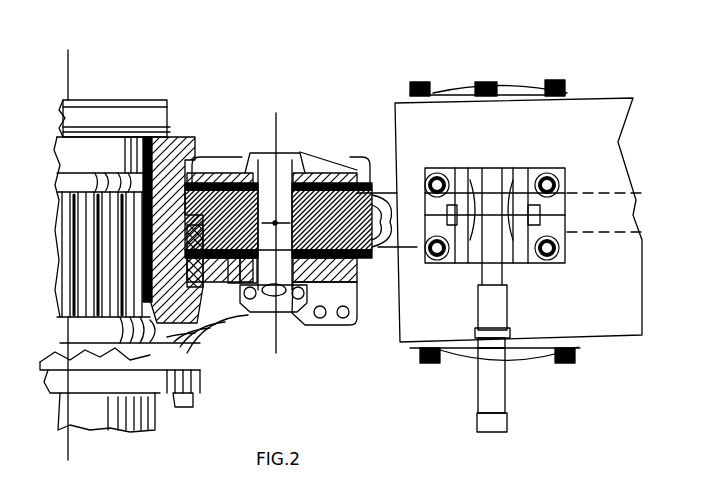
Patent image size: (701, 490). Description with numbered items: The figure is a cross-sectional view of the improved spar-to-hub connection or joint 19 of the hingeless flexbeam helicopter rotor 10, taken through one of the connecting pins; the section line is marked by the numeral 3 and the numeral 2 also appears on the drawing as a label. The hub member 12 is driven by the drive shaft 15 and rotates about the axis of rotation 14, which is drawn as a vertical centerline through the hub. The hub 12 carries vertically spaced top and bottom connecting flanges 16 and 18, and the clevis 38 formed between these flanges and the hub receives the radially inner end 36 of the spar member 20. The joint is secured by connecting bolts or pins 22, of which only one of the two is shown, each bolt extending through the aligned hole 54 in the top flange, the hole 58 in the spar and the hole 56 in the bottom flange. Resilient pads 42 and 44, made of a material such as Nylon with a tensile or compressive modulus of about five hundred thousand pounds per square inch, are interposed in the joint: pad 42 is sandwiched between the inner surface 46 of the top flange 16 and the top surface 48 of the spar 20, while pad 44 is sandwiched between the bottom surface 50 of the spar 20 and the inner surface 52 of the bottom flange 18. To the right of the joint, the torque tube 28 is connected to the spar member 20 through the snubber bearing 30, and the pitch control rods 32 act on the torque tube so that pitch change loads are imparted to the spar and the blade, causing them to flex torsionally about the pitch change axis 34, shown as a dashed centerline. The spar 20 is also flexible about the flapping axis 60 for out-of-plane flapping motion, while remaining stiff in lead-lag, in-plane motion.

The axis 2 is at (276, 210).
The section line 3 is at (276, 113).
The hingeless flexbeam helicopter rotor 10 is at (221, 93).
The hub member 12 is at (205, 361).
The axis of rotation 14 is at (72, 80).
The drive shaft 15 is at (153, 410).
The top connecting flange 16 is at (323, 162).
The bottom connecting flange 18 is at (312, 288).
The spar-to-hub connection or joint 19 is at (320, 150).
The spar member 20 is at (386, 258).
The connecting bolts or pins 22 is at (243, 160).
The torque tube 28 is at (470, 147).
The snubber bearing 30 is at (447, 90).
The pitch control rods 32 is at (497, 388).
The pitch change axis 34 is at (411, 220).
The radially inner end of spar 36 is at (120, 178).
The clevis 38 is at (217, 270).
The resilient pad 42 is at (362, 190).
The resilient pad 44 is at (366, 262).
The inner surface of flange 46 is at (225, 170).
The top surface of spar 48 is at (218, 172).
The bottom surface of spar 50 is at (212, 257).
The inner surface of flange 52 is at (224, 254).
The hole in flange 54 is at (282, 157).
The hole in flange 56 is at (273, 281).
The hole in spar 58 is at (274, 200).
The flapping axis 60 is at (570, 215).